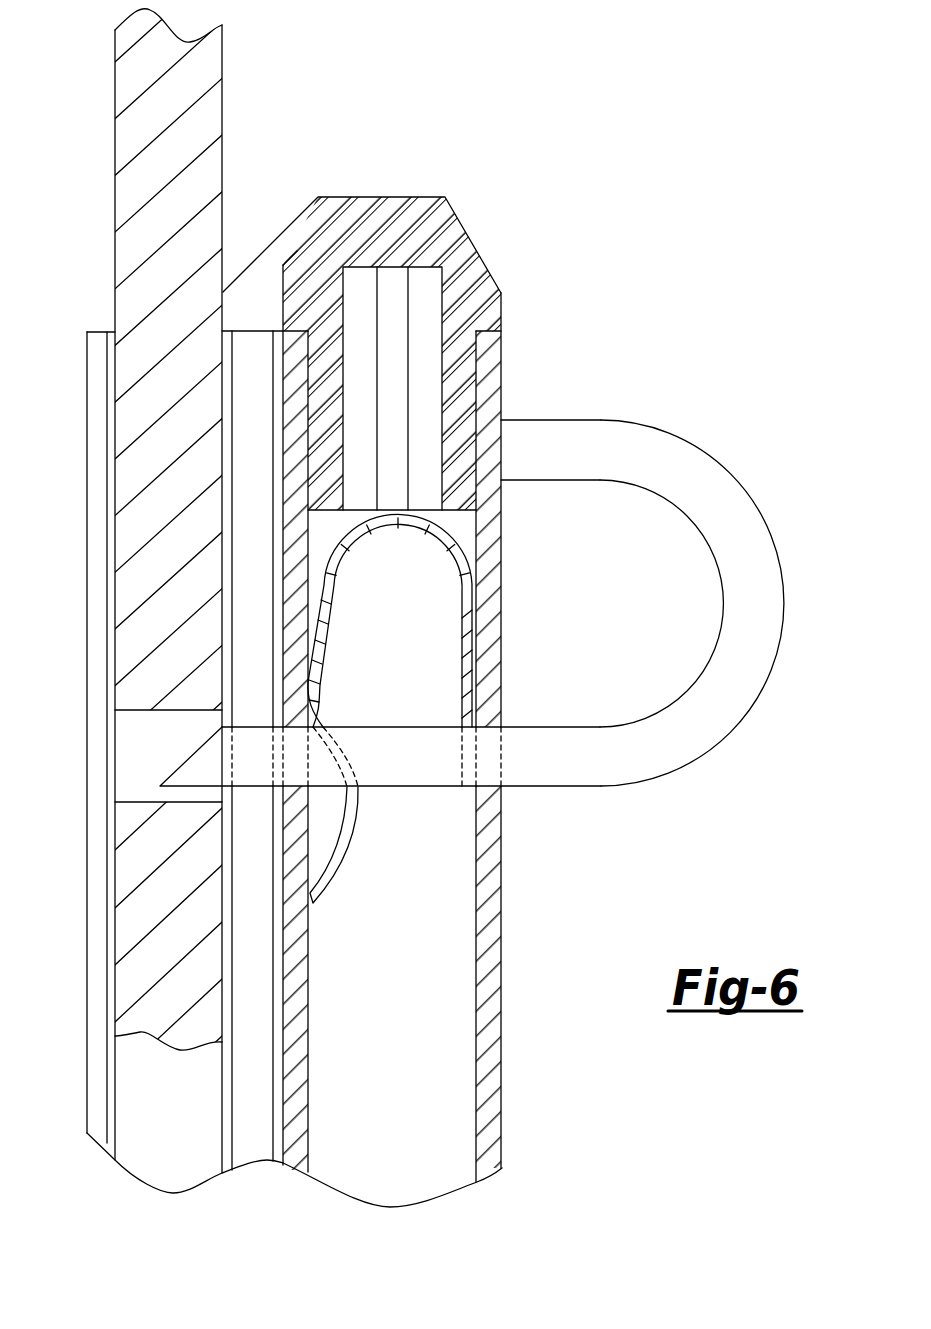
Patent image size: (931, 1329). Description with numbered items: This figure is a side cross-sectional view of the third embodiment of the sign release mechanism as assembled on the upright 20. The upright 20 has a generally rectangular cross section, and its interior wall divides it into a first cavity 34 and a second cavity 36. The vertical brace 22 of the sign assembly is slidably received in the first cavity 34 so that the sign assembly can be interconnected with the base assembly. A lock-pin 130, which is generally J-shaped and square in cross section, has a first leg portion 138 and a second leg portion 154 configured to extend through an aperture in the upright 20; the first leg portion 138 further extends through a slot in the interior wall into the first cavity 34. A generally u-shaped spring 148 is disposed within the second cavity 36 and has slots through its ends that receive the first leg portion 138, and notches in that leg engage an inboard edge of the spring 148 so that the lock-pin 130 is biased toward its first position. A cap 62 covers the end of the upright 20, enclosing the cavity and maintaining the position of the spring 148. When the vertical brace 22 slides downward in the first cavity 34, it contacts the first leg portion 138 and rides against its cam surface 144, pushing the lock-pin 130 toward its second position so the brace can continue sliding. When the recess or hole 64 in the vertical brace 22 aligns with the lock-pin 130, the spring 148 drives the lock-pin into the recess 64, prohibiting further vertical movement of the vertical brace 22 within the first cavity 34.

The upright 20 is at (490, 969).
The vertical brace 22 is at (132, 146).
The first cavity 34 is at (181, 1139).
The second cavity 36 is at (399, 1173).
The cap 62 is at (450, 247).
The recess or hole 64 is at (140, 802).
The lock-pin 130 is at (765, 617).
The first leg portion 138 is at (378, 770).
The cam surface 144 is at (173, 770).
The spring 148 is at (352, 543).
The second leg portion 154 is at (635, 440).